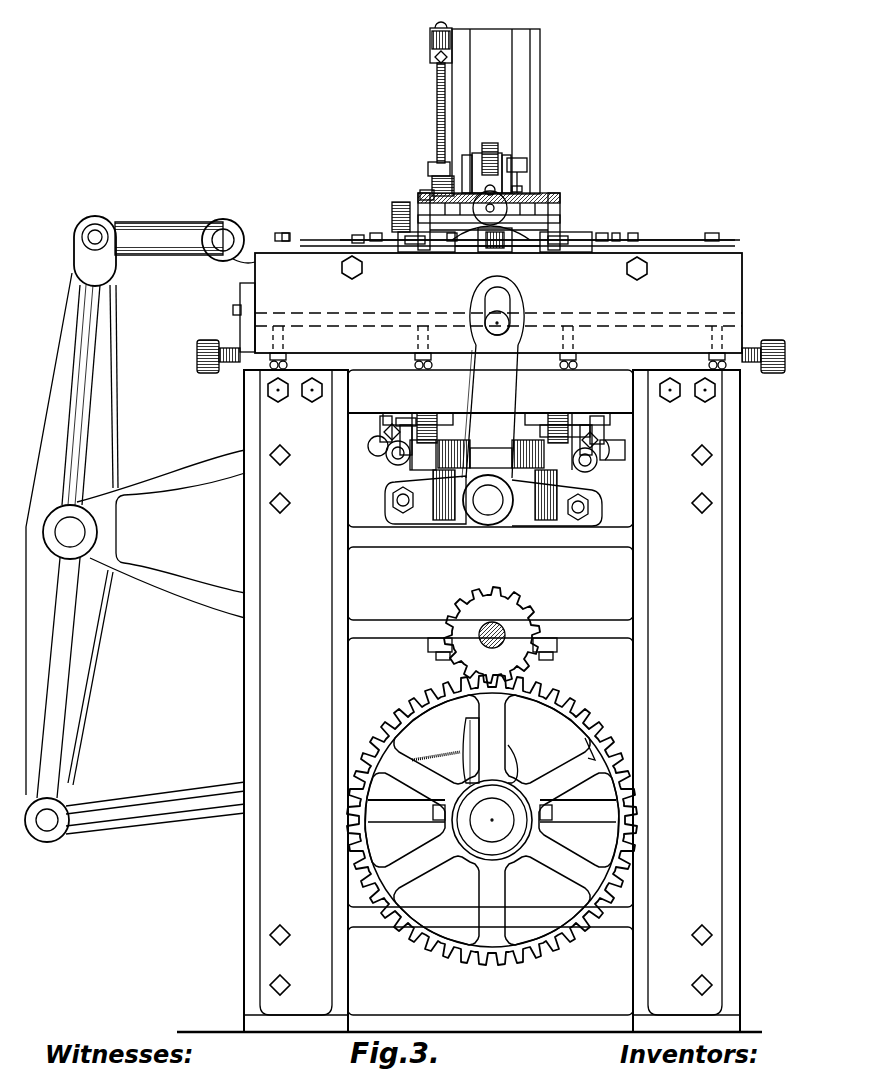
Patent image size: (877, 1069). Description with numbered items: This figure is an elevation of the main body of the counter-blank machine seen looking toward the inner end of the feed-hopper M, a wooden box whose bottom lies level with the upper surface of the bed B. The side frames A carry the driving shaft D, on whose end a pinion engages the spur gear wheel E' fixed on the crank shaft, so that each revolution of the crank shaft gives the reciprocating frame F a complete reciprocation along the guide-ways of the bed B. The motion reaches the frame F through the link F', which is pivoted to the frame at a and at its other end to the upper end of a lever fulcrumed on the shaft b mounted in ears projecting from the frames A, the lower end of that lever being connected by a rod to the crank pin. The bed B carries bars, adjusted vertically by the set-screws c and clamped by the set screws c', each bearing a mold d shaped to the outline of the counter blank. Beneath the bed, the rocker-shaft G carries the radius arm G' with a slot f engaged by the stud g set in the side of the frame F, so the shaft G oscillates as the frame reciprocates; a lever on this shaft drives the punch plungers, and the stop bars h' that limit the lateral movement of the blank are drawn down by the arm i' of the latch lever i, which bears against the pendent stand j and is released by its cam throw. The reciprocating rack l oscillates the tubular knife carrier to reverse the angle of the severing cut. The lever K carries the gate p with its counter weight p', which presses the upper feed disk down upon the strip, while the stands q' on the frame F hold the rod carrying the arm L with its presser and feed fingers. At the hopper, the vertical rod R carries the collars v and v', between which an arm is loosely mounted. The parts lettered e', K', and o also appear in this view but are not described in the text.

The side frames A is at (469, 701).
The reciprocating frame F is at (498, 301).
The link F' is at (148, 251).
The bed B is at (490, 431).
The pivot a is at (228, 241).
The shaft b is at (70, 532).
The set-screws c is at (492, 417).
The set screws c' is at (491, 356).
The mold d is at (352, 267).
The rail e' is at (529, 230).
The slot f is at (297, 240).
The stud g is at (509, 323).
The rocker-shaft G is at (488, 500).
The radius arm G' is at (493, 377).
The stop rods h' is at (398, 409).
The latch lever i is at (477, 438).
The arm i' is at (490, 418).
The pendent stand j is at (415, 412).
The reciprocating rack l is at (625, 450).
The lever K is at (486, 157).
The cross bar K' is at (491, 213).
The arm L is at (495, 252).
The hopper M is at (509, 111).
The vertical rod R is at (437, 97).
The screw o is at (516, 160).
The gate p is at (508, 212).
The counter weight p' is at (494, 264).
The stands q' is at (495, 255).
The collar v is at (439, 169).
The collar v' is at (420, 193).
The driving shaft D is at (492, 635).
The spur gear wheel E' is at (492, 820).